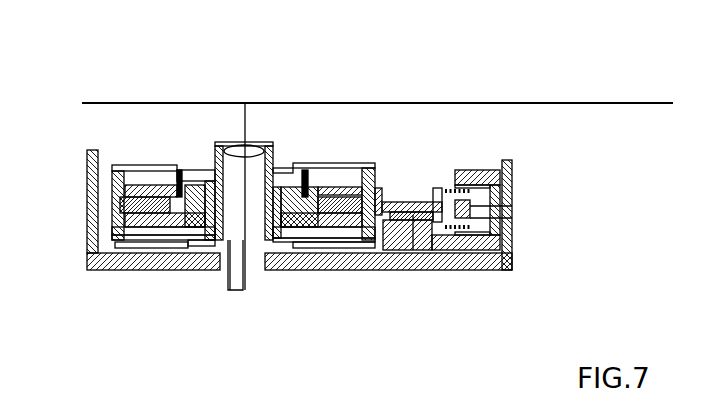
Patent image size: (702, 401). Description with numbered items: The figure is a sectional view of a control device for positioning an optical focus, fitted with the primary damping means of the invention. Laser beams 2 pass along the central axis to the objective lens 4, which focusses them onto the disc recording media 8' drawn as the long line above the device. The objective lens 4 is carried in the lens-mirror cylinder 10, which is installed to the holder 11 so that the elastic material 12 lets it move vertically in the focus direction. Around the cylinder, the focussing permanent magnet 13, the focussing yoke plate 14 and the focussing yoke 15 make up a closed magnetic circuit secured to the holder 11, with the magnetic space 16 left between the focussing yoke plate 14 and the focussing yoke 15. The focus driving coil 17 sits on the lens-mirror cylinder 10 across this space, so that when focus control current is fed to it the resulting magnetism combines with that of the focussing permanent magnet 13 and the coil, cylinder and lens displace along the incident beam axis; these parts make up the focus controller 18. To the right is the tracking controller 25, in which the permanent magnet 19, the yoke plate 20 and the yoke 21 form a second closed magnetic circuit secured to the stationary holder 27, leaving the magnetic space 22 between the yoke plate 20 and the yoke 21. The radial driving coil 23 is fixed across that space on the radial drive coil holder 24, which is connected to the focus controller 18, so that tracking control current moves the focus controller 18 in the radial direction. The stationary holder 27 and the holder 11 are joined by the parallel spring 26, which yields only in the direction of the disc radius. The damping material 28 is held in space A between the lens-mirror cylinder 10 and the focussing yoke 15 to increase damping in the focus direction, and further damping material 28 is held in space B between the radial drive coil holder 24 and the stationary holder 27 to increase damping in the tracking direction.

The disc recording media 8' is at (380, 64).
The lens-mirror cylinder 10 is at (214, 142).
The objective lens 4 is at (250, 146).
The laser beams 2 is at (245, 270).
The damping material 28 is at (229, 240).
The elastic material 12 is at (133, 165).
The focus controller 18 is at (215, 270).
The tracking controller 25 is at (497, 270).
The stationary holder 27 is at (507, 253).
The magnetic space 16 is at (173, 165).
The focussing yoke plate 14 is at (115, 198).
The focussing permanent magnet 13 is at (118, 210).
The focussing yoke 15 is at (118, 222).
The holder 11 is at (112, 240).
The parallel spring 26 is at (112, 243).
The focus driving coil 17 is at (337, 173).
The radial drive coil holder 24 is at (413, 200).
The radial driving coil 23 is at (430, 250).
The yoke plate 20 is at (505, 170).
The magnetic space 22 is at (465, 250).
The permanent magnet 19 is at (512, 206).
The yoke 21 is at (512, 218).